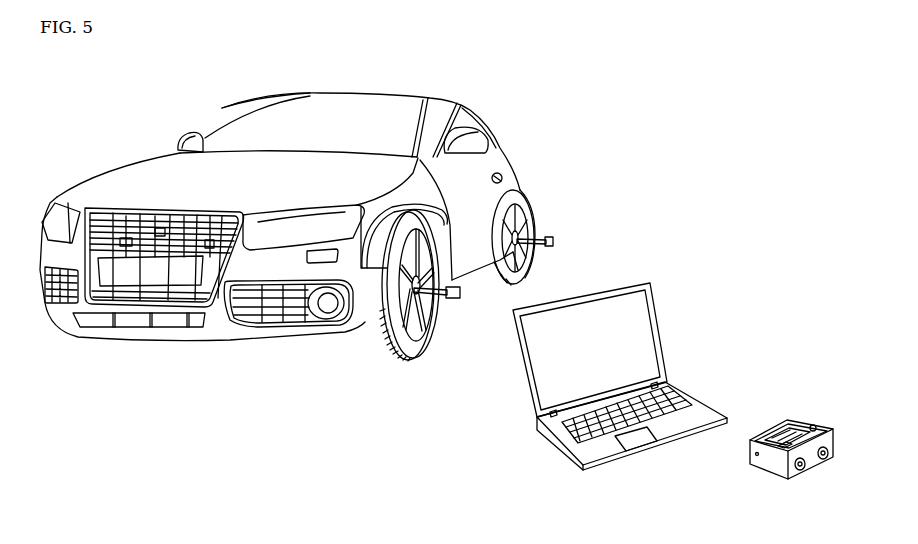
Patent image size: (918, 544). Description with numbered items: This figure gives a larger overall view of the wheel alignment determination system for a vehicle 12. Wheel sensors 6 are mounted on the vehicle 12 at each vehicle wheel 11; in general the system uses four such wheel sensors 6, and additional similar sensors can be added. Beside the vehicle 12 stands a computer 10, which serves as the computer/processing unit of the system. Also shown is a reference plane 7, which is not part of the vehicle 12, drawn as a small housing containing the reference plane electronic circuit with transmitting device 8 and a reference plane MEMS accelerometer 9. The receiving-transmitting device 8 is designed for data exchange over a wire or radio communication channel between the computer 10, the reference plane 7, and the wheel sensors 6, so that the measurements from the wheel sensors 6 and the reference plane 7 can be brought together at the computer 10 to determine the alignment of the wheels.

The vehicle 12 is at (428, 117).
The vehicle wheel 11 is at (416, 345).
The wheel sensor 6 is at (447, 293).
The computer 10 is at (714, 375).
The reference plane 7 is at (780, 444).
The reference plane electronic circuit with transmitting device 8 is at (782, 445).
The reference plane MEMS accelerometer 9 is at (785, 447).